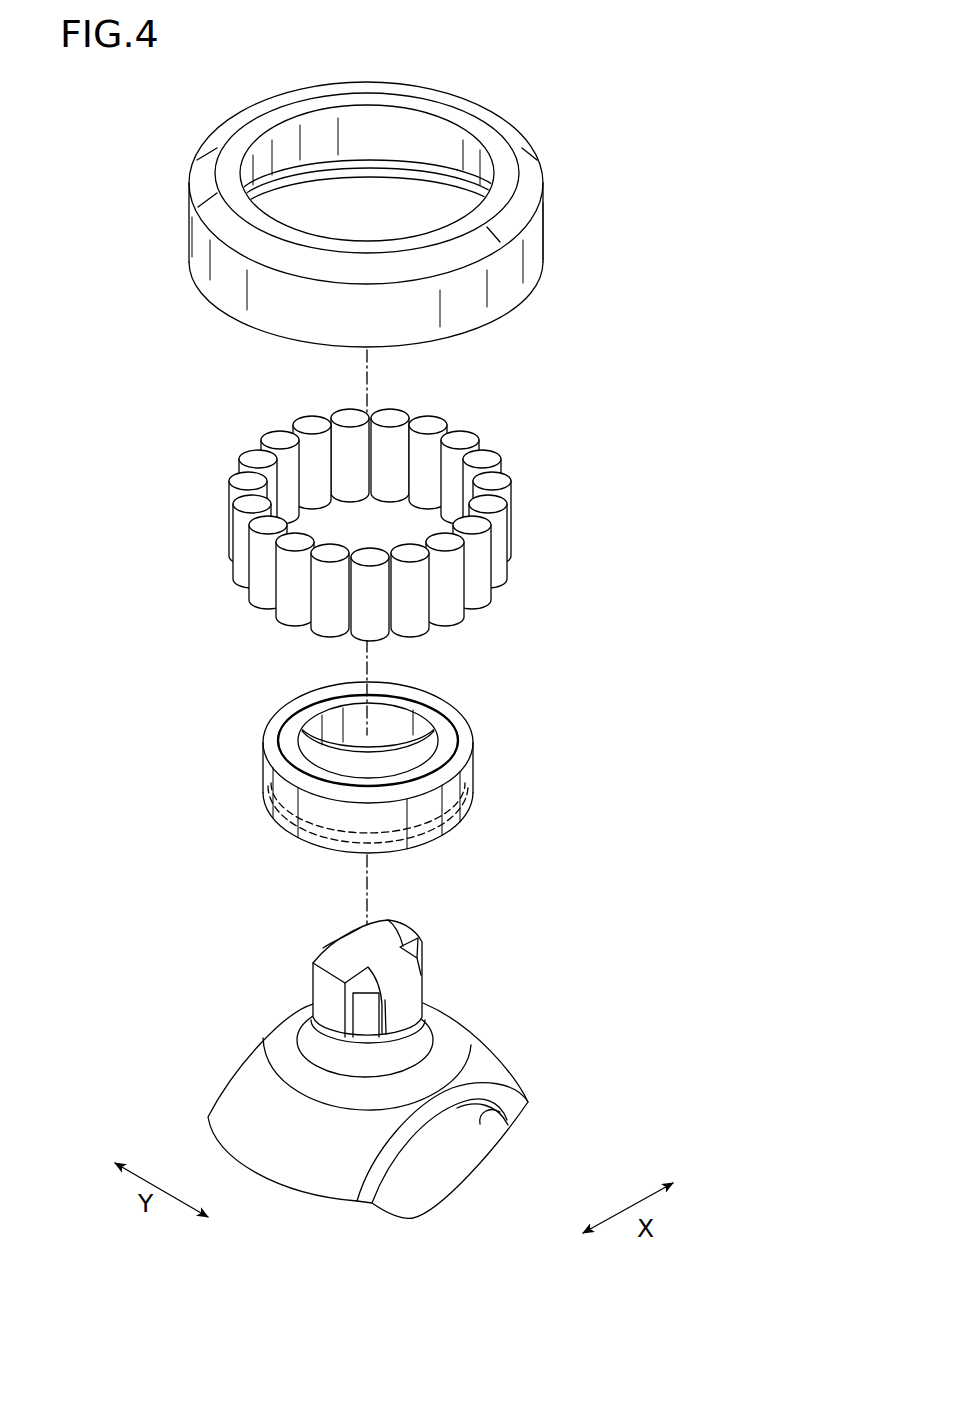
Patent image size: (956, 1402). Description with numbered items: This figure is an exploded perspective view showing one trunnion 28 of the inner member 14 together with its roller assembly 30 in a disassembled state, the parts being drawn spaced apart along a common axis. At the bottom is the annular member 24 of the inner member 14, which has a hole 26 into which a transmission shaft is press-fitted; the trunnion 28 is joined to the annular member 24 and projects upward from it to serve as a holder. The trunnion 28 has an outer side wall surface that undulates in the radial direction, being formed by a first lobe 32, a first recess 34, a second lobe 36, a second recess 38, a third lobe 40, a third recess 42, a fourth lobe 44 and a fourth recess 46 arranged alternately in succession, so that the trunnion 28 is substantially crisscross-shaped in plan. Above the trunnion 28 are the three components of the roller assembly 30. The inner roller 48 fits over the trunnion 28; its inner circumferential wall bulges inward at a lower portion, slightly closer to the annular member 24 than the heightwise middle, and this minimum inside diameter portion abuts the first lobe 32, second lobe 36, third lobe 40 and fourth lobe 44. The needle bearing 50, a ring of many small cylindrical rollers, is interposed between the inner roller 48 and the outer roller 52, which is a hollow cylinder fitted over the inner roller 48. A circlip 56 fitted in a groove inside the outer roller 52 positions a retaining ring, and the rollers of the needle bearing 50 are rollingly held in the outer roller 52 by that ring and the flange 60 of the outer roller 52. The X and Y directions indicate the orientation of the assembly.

The inner member 14 is at (383, 1121).
The annular member 24 is at (487, 1065).
The hole 26 is at (483, 1125).
The trunnion 28 is at (359, 990).
The roller assembly 30 is at (556, 382).
The first lobe 32 is at (330, 1012).
The first recess 34 is at (315, 962).
The second lobe 36 is at (340, 948).
The second recess 38 is at (367, 927).
The third lobe 40 is at (403, 935).
The third recess 42 is at (419, 958).
The fourth lobe 44 is at (407, 997).
The fourth recess 46 is at (367, 1023).
The inner roller 48 is at (472, 782).
The needle bearing 50 is at (272, 438).
The outer roller 52 is at (399, 200).
The circlip 56 is at (310, 180).
The flange 60 is at (520, 143).